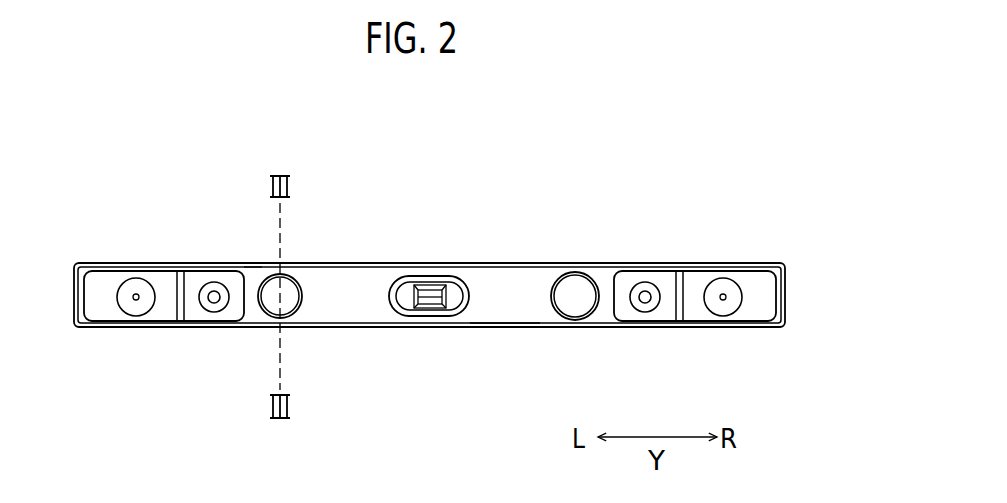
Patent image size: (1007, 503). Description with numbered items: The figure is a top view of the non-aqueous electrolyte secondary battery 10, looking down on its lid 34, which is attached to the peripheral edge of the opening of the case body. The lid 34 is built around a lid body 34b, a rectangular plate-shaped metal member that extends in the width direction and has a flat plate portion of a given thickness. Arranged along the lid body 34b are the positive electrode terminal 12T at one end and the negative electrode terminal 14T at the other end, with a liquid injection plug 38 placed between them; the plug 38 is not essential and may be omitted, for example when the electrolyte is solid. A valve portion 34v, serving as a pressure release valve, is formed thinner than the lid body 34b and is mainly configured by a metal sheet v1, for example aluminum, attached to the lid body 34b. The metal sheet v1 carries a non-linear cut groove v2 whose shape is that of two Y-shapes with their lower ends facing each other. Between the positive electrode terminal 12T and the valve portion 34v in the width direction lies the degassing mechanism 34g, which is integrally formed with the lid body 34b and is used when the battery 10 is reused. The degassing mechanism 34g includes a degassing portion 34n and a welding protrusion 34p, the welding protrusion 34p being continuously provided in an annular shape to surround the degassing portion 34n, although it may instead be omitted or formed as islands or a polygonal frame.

The non-aqueous electrolyte secondary battery 10 is at (757, 180).
The lid 34 is at (85, 262).
The degassing mechanism 34g is at (313, 163).
The degassing portion 34n is at (252, 265).
The welding protrusion 34p is at (297, 263).
The valve portion 34v is at (451, 175).
The metal sheet v1 is at (455, 295).
The cut groove v2 is at (424, 295).
The lid body 34b is at (490, 317).
The liquid injection plug 38 is at (573, 255).
The positive electrode terminal 12T is at (216, 312).
The negative electrode terminal 14T is at (648, 312).